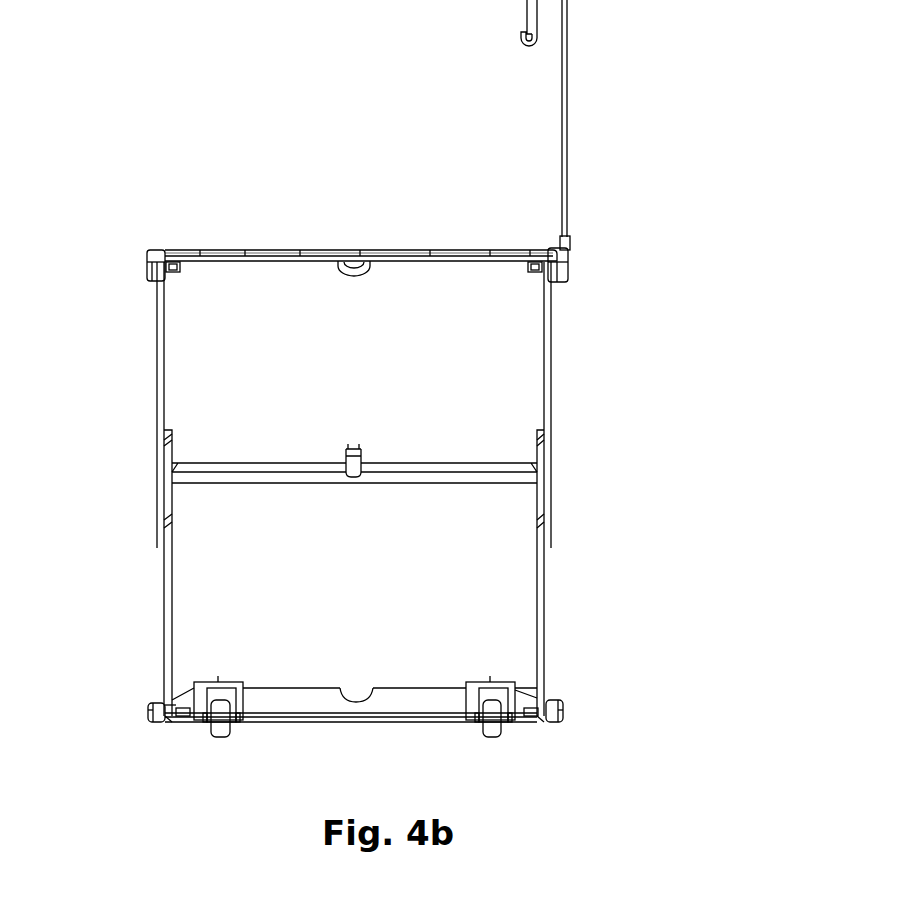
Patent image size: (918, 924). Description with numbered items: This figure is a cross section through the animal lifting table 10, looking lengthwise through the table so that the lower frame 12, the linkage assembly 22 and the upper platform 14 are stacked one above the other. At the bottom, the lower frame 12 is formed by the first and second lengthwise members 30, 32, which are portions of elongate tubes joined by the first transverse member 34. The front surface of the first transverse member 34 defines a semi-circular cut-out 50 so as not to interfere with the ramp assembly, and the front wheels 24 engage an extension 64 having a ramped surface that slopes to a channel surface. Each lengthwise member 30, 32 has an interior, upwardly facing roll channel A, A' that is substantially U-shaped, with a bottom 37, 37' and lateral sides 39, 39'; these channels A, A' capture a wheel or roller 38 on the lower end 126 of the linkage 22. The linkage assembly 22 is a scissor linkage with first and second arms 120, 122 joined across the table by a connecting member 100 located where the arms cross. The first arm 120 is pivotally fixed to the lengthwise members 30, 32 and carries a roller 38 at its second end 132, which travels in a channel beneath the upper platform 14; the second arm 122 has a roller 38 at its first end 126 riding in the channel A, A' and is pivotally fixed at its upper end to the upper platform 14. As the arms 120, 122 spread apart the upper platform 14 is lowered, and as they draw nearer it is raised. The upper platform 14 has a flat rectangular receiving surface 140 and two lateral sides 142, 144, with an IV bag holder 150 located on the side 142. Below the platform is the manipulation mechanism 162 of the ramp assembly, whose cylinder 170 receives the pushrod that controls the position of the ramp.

The animal lifting table 10 is at (727, 410).
The lower frame 12 is at (130, 690).
The upper platform 14 is at (163, 249).
The linkage assembly 22 is at (557, 473).
The front wheels 24 is at (220, 738).
The first lengthwise member 30 is at (565, 722).
The second lengthwise member 32 is at (149, 717).
The first transverse member 34 is at (408, 690).
The bottom of roll channel A 37 is at (551, 746).
The bottom of roll channel A' 37' is at (143, 752).
The wheel or roller 38 is at (175, 262).
The lateral side of roll channel A 39 is at (593, 703).
The lateral side of roll channel A' 39' is at (124, 703).
The cut-out 50 is at (355, 690).
The extension 64 is at (222, 681).
The connecting member 100 is at (455, 462).
The first arm 120 is at (157, 392).
The second arm 122 is at (157, 565).
The first end of second arm 126 is at (174, 702).
The second end of first arm 132 is at (170, 273).
The receiving surface 140 is at (400, 250).
The lateral side of upper platform 142 is at (570, 264).
The lateral side of upper platform 144 is at (147, 265).
The IV bag holder 150 is at (567, 100).
The manipulation mechanism 162 is at (348, 271).
The cylinder 170 is at (360, 271).
The roll channel A is at (558, 674).
The roll channel A' is at (145, 671).